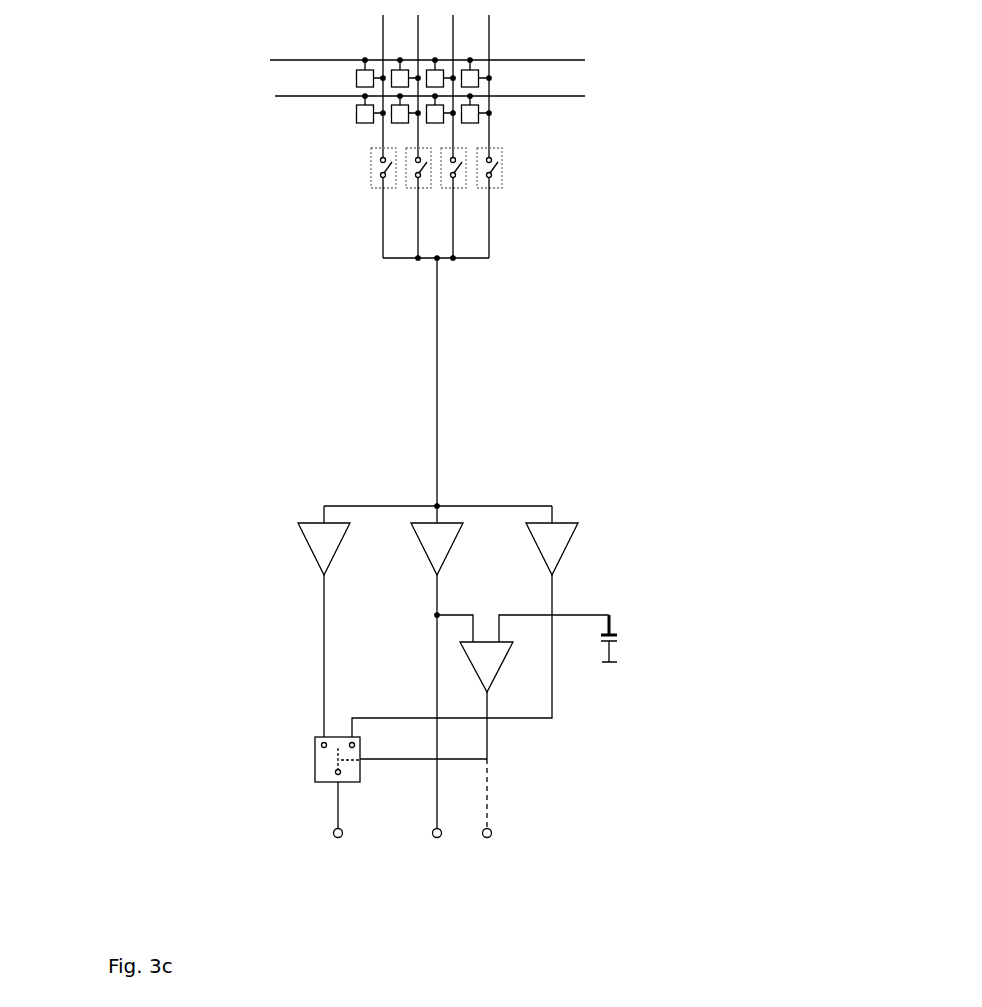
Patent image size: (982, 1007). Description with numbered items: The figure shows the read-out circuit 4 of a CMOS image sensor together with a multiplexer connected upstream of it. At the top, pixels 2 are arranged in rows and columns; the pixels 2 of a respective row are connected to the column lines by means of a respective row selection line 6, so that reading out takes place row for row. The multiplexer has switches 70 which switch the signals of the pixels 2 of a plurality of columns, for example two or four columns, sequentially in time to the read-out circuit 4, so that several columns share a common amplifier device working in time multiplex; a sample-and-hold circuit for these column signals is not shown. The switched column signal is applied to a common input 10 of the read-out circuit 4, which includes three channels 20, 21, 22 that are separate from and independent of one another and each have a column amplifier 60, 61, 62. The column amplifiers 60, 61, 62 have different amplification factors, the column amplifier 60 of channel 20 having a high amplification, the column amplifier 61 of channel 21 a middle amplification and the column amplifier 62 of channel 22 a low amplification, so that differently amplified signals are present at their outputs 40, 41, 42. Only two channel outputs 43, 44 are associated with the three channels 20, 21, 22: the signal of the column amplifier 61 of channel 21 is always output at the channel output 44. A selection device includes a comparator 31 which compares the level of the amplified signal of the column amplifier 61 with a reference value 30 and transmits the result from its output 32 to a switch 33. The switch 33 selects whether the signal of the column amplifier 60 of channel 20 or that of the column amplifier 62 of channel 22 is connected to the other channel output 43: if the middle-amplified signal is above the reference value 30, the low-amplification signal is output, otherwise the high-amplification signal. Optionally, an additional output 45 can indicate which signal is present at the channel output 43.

The pixels 2 is at (343, 129).
The read-out circuit 4 is at (739, 273).
The row selection line 6 is at (265, 67).
The common input 10 is at (430, 307).
The channel 20 is at (287, 450).
The channel 21 is at (491, 460).
The channel 22 is at (595, 472).
The reference value 30 is at (622, 645).
The comparator 31 is at (510, 668).
The output of the comparator 32 is at (495, 742).
The switch 33 is at (310, 762).
The output of the column amplifier 40 is at (316, 620).
The output of the column amplifier 41 is at (431, 641).
The output of the column amplifier 42 is at (562, 711).
The channel output 43 is at (334, 842).
The channel output 44 is at (435, 845).
The additional output 45 is at (490, 845).
The column amplifier 60 is at (301, 551).
The column amplifier 61 is at (459, 554).
The column amplifier 62 is at (574, 550).
The switches 70 is at (515, 171).